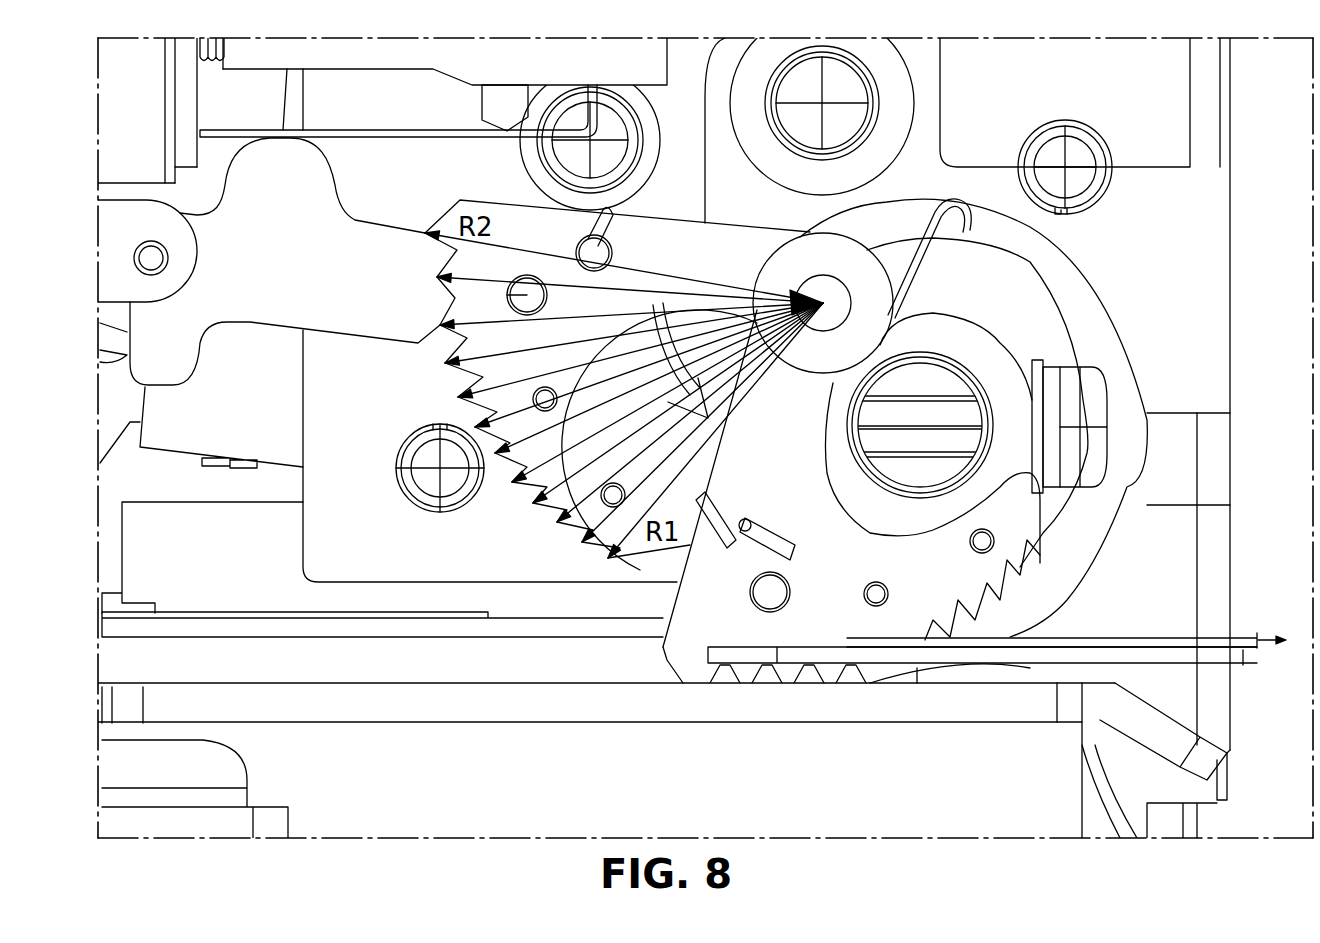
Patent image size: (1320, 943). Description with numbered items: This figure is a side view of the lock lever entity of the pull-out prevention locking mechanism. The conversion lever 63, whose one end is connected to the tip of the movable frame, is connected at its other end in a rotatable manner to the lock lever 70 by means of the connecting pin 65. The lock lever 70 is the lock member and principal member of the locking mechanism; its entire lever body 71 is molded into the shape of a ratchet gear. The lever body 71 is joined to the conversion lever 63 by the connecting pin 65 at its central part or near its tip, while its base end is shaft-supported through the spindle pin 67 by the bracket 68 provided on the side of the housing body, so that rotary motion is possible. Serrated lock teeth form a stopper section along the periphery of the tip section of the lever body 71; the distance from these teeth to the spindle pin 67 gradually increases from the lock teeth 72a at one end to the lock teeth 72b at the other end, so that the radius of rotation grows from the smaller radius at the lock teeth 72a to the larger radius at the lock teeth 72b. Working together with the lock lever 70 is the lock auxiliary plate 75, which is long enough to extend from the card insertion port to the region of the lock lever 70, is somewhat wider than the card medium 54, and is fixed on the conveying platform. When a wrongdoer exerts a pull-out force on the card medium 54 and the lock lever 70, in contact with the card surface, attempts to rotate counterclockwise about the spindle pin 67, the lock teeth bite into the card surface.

The card medium 54 is at (1243, 633).
The conversion lever 63 is at (222, 289).
The connecting pin 65 is at (432, 306).
The spindle pin 67 is at (820, 287).
The bracket 68 is at (947, 277).
The lock lever 70 is at (666, 213).
The lever body 71 is at (930, 567).
The lock teeth 72a is at (1015, 517).
The lock teeth 72b is at (735, 673).
The lock auxiliary plate 75 is at (1244, 652).